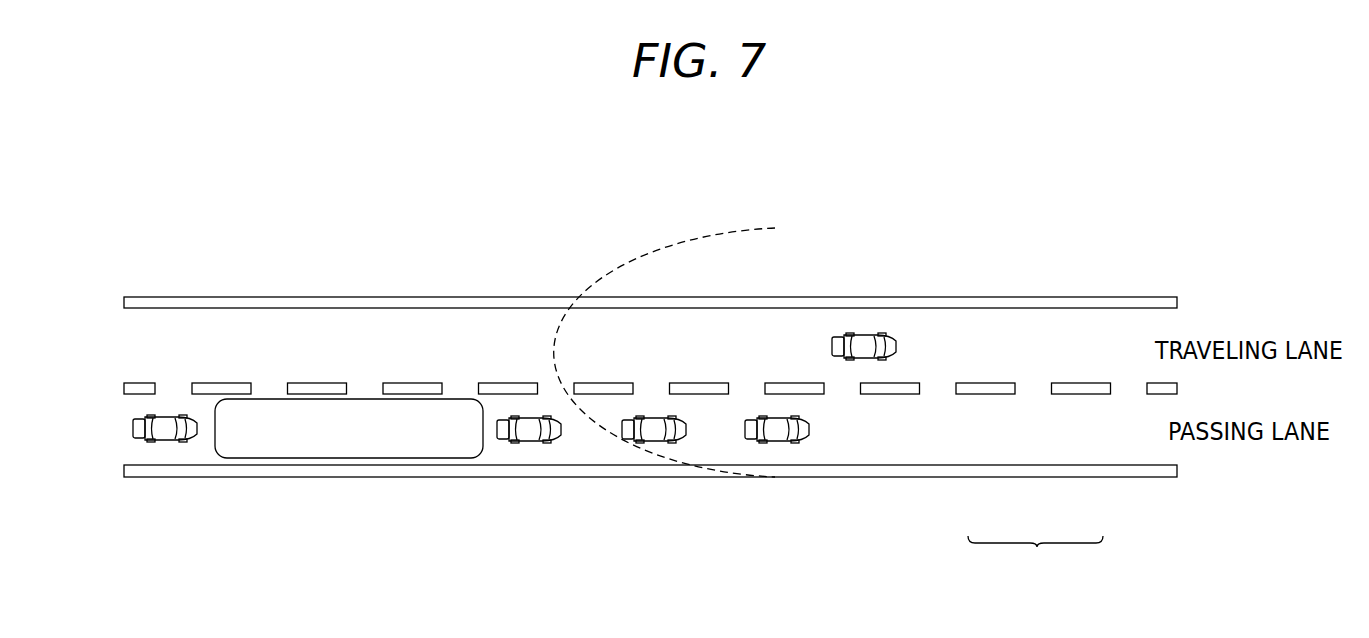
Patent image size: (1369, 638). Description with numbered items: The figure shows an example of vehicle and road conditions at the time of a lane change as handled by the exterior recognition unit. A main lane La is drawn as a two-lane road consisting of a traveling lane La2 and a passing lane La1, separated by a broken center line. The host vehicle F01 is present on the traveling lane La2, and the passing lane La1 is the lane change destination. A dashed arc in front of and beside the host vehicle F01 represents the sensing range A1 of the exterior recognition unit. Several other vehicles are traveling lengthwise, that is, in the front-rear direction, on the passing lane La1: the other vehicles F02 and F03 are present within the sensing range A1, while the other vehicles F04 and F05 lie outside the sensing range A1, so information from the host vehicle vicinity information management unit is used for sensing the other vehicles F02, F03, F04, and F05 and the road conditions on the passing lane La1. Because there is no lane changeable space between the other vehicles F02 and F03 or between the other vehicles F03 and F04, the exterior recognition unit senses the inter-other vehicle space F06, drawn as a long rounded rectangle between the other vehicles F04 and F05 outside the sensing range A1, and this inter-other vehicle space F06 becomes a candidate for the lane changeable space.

The sensing range A1 is at (655, 242).
The host vehicle F01 is at (857, 348).
The other vehicle F02 is at (772, 430).
The other vehicle F03 is at (648, 430).
The other vehicle F04 is at (525, 430).
The other vehicle F05 is at (162, 430).
The inter-other vehicle space F06 is at (373, 459).
The passing lane La1 is at (990, 422).
The traveling lane La2 is at (1067, 343).
The main lane La is at (1035, 559).